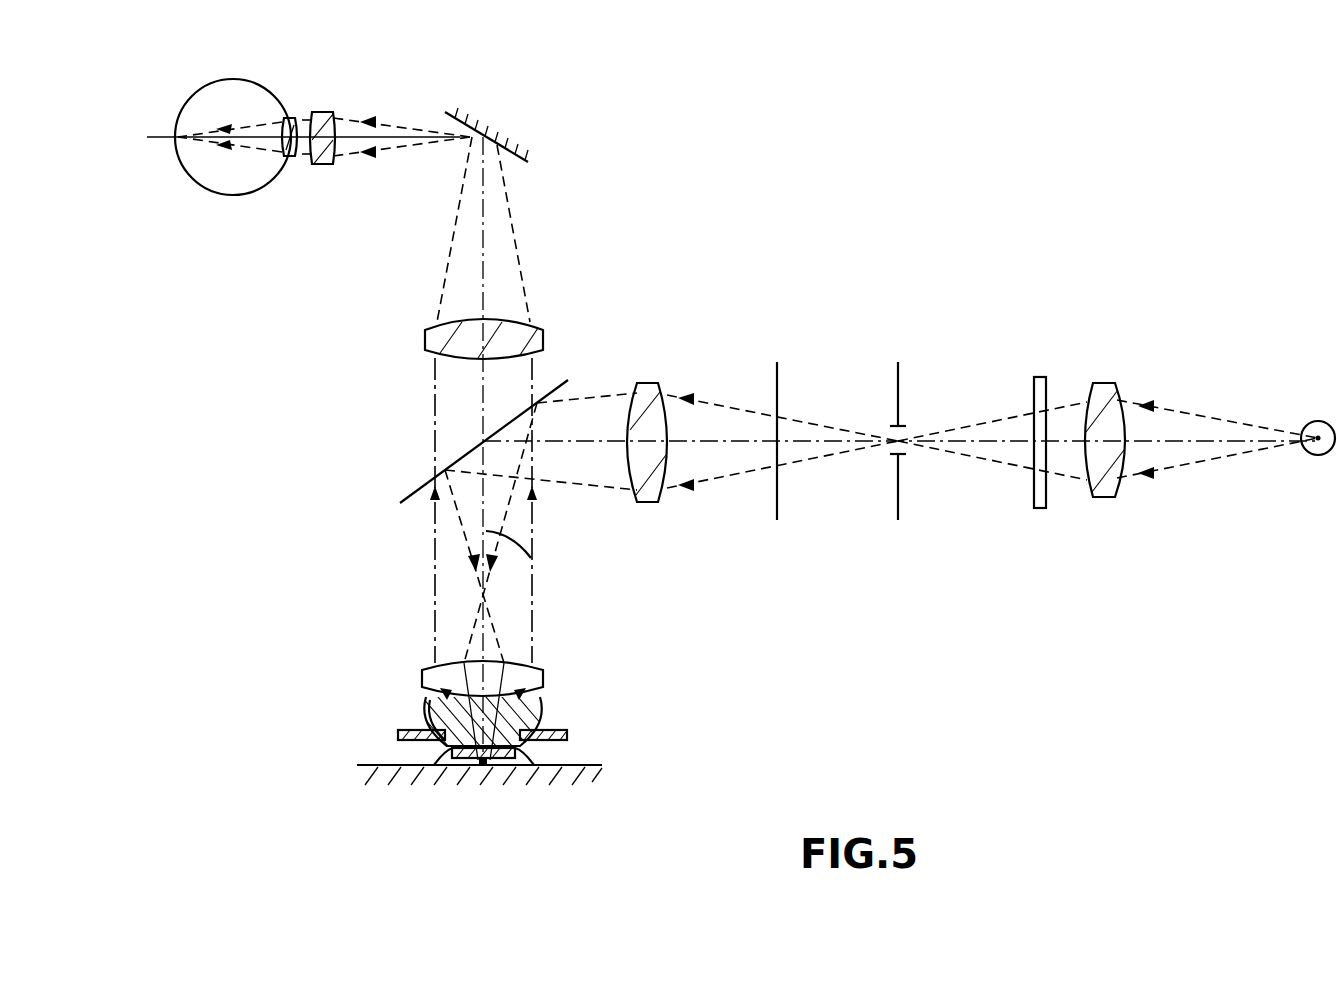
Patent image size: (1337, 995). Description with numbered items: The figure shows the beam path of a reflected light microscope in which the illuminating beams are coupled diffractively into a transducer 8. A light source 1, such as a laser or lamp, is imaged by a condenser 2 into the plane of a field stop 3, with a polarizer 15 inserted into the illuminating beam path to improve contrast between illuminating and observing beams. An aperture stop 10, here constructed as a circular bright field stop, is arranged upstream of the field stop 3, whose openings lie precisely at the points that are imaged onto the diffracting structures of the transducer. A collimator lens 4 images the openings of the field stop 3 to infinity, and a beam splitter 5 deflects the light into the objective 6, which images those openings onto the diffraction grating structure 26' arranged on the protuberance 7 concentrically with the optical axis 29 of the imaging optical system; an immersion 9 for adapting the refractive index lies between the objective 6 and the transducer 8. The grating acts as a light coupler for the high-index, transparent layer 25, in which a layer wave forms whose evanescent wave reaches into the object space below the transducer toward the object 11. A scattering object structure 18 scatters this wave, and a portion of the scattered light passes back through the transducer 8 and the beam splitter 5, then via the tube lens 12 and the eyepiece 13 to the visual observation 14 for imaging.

The light source 1 is at (1322, 456).
The condenser 2 is at (1113, 496).
The field stop 3 is at (777, 376).
The collimator lens 4 is at (658, 390).
The beam splitter 5 is at (566, 379).
The objective 6 is at (543, 681).
The protuberance 7 is at (440, 732).
The transducer 8 is at (567, 735).
The immersion 9 is at (540, 715).
The aperture stop 10 is at (898, 376).
The object 11 is at (585, 772).
The tube lens 12 is at (543, 334).
The eyepiece 13 is at (325, 108).
The visual observation 14 is at (255, 94).
The polarizer 15 is at (1040, 509).
The scattering object structure 18 is at (483, 767).
The high-index layer 25 is at (500, 760).
The diffraction grating structure 26' is at (490, 794).
The optical axis 29 is at (535, 557).